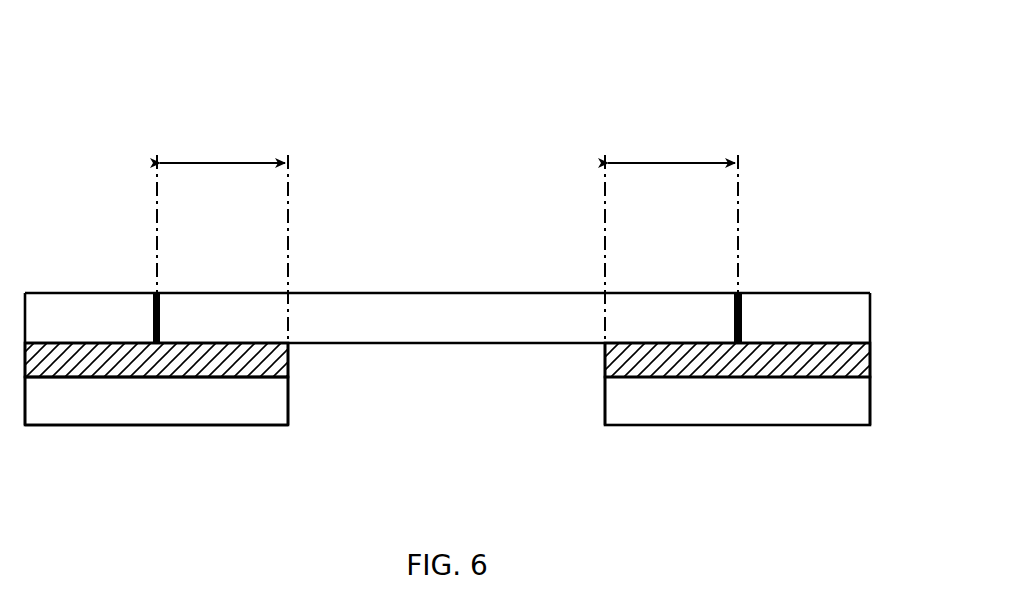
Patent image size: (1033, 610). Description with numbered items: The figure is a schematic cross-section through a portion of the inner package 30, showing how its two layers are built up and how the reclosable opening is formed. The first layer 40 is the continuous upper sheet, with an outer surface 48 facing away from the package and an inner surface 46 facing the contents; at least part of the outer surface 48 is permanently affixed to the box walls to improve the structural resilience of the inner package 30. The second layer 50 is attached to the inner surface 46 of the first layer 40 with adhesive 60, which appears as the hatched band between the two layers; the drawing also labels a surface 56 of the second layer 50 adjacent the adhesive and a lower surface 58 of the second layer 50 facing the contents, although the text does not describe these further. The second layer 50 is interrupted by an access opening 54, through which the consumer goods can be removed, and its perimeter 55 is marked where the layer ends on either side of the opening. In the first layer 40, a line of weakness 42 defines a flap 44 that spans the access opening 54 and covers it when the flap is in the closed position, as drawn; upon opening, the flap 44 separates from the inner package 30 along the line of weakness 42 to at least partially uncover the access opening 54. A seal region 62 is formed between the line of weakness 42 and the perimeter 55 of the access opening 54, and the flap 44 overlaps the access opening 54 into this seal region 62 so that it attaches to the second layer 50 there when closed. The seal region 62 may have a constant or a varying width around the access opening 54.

The inner package 30 is at (615, 100).
The first layer 40 is at (53, 293).
The line of weakness 42 is at (153, 312).
The flap 44 is at (372, 245).
The inner surface of the first layer 46 is at (98, 352).
The outer surface of the first layer 48 is at (447, 293).
The second layer 50 is at (53, 425).
The access opening 54 is at (518, 452).
The perimeter of the access opening 55 is at (288, 425).
The bottom surface of adhesive 56 is at (100, 372).
The bottom surface 58 is at (222, 425).
The adhesive 60 is at (823, 345).
The seal region 62 is at (222, 163).